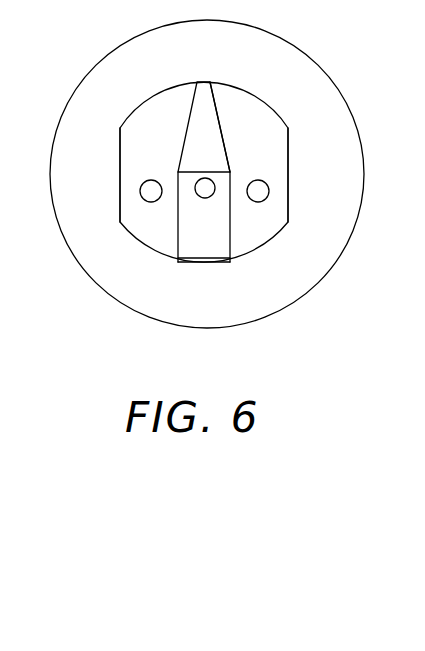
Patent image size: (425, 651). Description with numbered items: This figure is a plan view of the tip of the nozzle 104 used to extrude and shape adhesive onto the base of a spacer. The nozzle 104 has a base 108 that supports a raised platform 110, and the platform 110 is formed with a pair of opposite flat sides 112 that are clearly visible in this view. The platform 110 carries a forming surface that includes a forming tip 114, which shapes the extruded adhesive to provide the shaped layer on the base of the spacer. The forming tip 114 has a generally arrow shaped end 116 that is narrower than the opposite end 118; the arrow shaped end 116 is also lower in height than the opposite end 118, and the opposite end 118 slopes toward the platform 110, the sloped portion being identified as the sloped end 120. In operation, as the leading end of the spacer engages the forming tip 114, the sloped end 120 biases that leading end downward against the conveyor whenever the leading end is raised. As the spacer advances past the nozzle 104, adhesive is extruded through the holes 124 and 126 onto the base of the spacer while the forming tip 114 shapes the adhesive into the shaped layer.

The nozzle 104 is at (183, 333).
The base 108 is at (283, 305).
The raised platform 110 is at (281, 117).
The flat sides 112 is at (120, 200).
The forming tip 114 is at (210, 93).
The arrow shaped end 116 is at (225, 117).
The opposite end 118 is at (178, 228).
The sloped end 120 is at (210, 266).
The hole 124 is at (147, 184).
The hole 126 is at (203, 178).